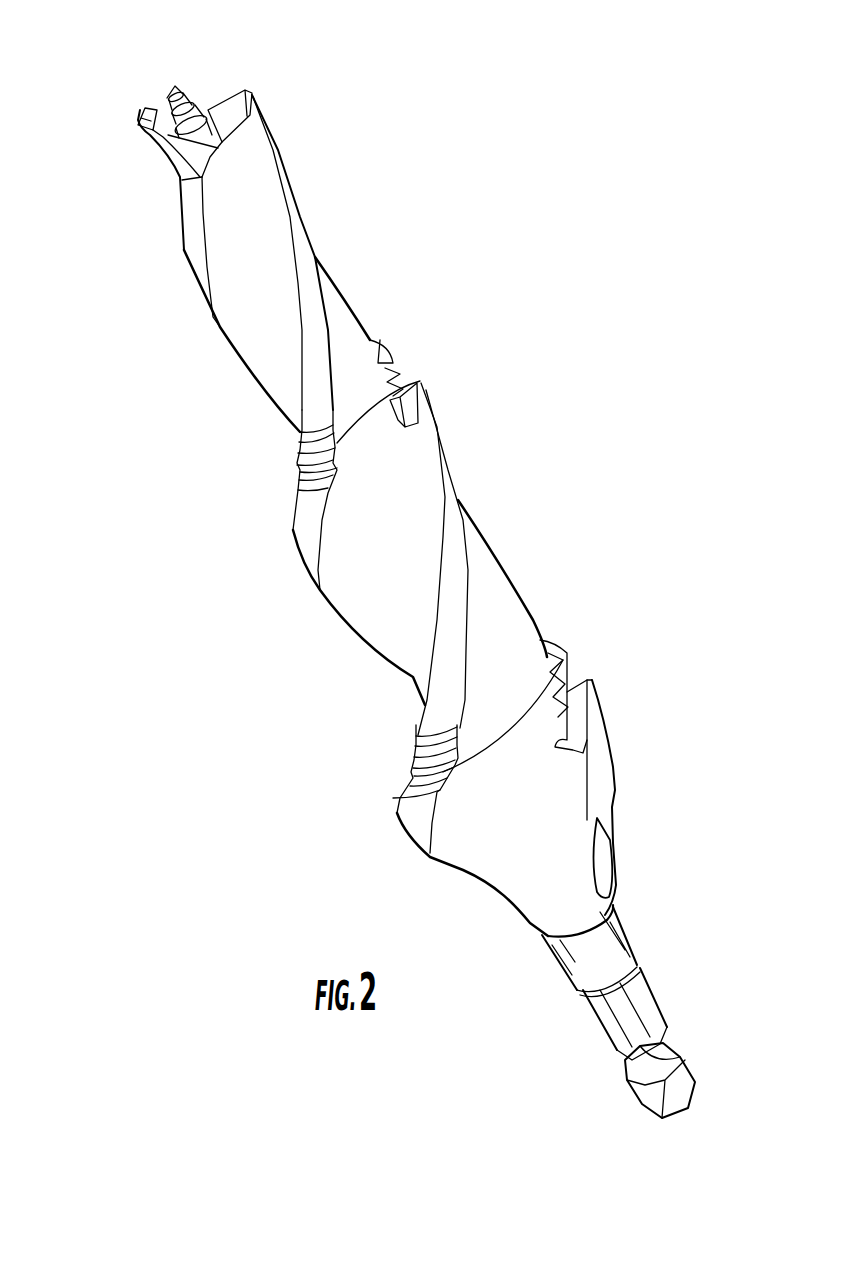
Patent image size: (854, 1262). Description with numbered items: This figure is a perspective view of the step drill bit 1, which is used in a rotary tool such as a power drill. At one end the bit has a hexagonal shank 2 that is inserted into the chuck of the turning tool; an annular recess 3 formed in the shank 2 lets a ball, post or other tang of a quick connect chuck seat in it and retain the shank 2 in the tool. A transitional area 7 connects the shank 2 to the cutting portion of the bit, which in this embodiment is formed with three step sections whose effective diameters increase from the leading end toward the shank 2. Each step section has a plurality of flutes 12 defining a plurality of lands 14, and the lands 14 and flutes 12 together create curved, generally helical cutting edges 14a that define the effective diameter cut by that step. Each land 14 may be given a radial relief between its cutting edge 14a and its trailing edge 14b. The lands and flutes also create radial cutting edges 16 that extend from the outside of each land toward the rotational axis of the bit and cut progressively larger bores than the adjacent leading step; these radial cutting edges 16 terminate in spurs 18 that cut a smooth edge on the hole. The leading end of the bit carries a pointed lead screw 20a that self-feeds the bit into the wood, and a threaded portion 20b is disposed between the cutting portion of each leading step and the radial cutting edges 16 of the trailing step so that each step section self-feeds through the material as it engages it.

The bit 1 is at (526, 204).
The shank 2 is at (660, 1007).
The annular recess 3 is at (627, 1068).
The transitional area 7 is at (630, 915).
The flutes 12 is at (247, 158).
The lands 14 is at (140, 110).
The cutting edges 14a is at (205, 232).
The trailing edges 14b is at (182, 220).
The radial cutting edges 16 is at (223, 97).
The spurs 18 is at (145, 107).
The pointed lead screw 20a is at (177, 85).
The threaded portion 20b is at (387, 367).